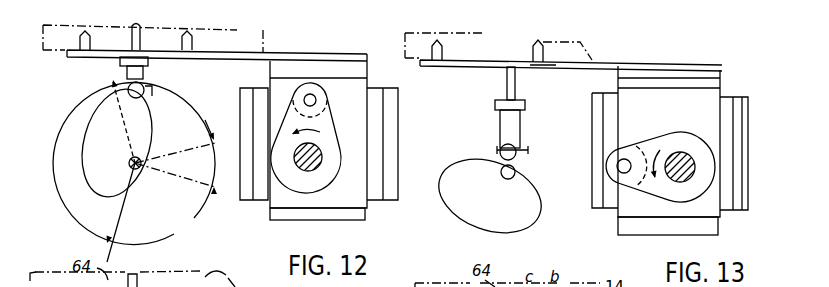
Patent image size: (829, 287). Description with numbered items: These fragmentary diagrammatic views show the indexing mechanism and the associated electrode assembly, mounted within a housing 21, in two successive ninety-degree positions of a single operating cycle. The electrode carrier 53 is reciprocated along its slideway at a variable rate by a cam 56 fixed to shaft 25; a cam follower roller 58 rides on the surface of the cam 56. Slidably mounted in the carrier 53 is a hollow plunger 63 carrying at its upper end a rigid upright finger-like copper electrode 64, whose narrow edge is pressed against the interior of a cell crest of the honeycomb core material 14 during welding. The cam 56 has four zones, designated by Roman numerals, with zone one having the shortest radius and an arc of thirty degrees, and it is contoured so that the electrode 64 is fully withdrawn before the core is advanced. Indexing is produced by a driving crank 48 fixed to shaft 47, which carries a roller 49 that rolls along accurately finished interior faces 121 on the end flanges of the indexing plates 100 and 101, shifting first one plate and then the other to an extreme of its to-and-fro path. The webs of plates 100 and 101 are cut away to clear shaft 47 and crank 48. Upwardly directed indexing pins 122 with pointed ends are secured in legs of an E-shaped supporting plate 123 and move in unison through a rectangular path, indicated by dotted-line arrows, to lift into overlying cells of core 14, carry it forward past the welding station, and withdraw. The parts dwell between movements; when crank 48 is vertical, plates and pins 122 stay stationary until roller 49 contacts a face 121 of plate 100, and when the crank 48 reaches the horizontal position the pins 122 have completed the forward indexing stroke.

In FIG. 12, the honeycomb core material 14 is at (257, 27).
In FIG. 13, the honeycomb core material 14 is at (575, 35).
In FIG. 12, the housing 21 is at (374, 80).
In FIG. 13, the housing 21 is at (734, 88).
In FIG. 12, the shaft 25 is at (140, 170).
In FIG. 13, the shaft 25 is at (500, 172).
In FIG. 12, the shaft 47 is at (313, 175).
In FIG. 13, the shaft 47 is at (680, 152).
In FIG. 12, the driving crank 48 is at (340, 140).
In FIG. 13, the driving crank 48 is at (650, 146).
In FIG. 12, the roller 49 is at (327, 88).
In FIG. 13, the roller 49 is at (606, 178).
In FIG. 13, the electrode carrier 53 is at (528, 150).
In FIG. 12, the cam 56 is at (144, 134).
In FIG. 13, the cam 56 is at (517, 218).
In FIG. 12, the cam follower roller 58 is at (155, 95).
In FIG. 13, the cam follower roller 58 is at (516, 160).
In FIG. 13, the hollow plunger 63 is at (500, 121).
In FIG. 12, the copper electrode 64 is at (144, 35).
In FIG. 13, the copper electrode 64 is at (508, 84).
In FIG. 12, the indexing plate 100 is at (402, 169).
In FIG. 13, the indexing plate 100 is at (750, 158).
In FIG. 12, the indexing plate 101 is at (348, 228).
In FIG. 13, the indexing plate 101 is at (702, 238).
In FIG. 12, the interior faces 121 is at (255, 186).
In FIG. 13, the interior faces 121 is at (592, 200).
In FIG. 12, the indexing pins 122 is at (79, 34).
In FIG. 13, the indexing pins 122 is at (432, 47).
In FIG. 12, the E-shaped supporting plate 123 is at (100, 60).